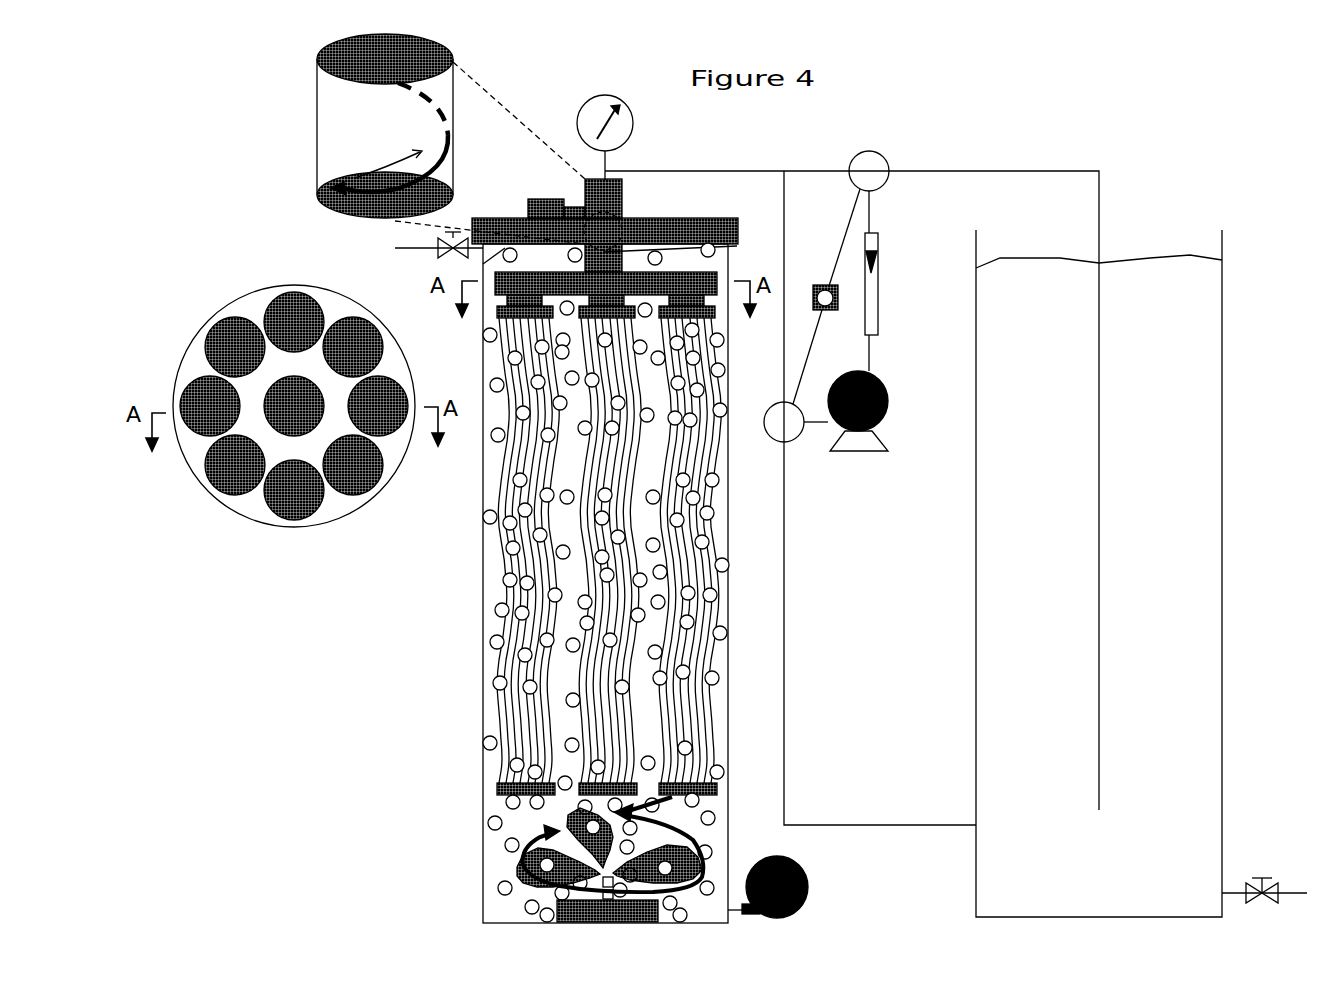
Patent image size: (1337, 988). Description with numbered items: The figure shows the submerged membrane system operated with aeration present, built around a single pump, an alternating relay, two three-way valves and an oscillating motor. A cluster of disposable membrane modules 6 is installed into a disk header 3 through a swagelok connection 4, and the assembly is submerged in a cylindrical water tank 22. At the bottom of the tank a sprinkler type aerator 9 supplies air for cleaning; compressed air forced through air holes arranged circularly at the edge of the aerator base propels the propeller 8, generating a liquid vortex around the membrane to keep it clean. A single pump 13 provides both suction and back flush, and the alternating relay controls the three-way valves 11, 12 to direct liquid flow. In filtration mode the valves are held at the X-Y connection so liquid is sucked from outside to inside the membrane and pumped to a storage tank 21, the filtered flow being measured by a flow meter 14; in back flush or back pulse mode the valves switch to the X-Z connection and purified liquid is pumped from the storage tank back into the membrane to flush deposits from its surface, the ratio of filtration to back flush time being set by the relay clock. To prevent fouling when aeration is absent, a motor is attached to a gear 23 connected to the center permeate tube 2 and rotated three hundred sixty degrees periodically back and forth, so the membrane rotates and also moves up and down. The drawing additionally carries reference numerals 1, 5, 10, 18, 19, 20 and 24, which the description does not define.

The pressure gauge 1 is at (597, 135).
The center permeate tube 2 is at (603, 225).
The disk header 3 is at (605, 235).
The swagelok connection 4 is at (606, 289).
The hollow fiber membrane module 5 is at (445, 540).
The membrane modules 6 is at (628, 551).
The propeller 8 is at (610, 848).
The sprinkler type aerator 9 is at (607, 910).
The stirrer motor 10 is at (785, 887).
The three-way valve 11 is at (787, 423).
The three-way valve 12 is at (870, 167).
The pump 13 is at (879, 411).
The flow meter 14 is at (891, 284).
The drain valve 18 is at (1264, 871).
The inlet valve 19 is at (450, 244).
The air bubbles 20 is at (497, 680).
The storage tank 21 is at (1099, 573).
The cylindrical water tank 22 is at (483, 545).
The gear 23 is at (469, 142).
The side block 24 is at (530, 199).